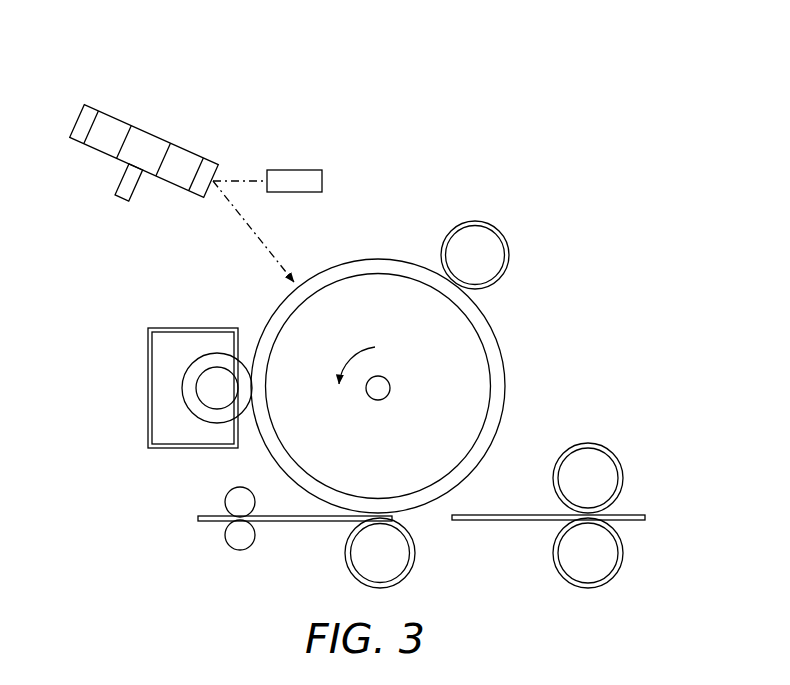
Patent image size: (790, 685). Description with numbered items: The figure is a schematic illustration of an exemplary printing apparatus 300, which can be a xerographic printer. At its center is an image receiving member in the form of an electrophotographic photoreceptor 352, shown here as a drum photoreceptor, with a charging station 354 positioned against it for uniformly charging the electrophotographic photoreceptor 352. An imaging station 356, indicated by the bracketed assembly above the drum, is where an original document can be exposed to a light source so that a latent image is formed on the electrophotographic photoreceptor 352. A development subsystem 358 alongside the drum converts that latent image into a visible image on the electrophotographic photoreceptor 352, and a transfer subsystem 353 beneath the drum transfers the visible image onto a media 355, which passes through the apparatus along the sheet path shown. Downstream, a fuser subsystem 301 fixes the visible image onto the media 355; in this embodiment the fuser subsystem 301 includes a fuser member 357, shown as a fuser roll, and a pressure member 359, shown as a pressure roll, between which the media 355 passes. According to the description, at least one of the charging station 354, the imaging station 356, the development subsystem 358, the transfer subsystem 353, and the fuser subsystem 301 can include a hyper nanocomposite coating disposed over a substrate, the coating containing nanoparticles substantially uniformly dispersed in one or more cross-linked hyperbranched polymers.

The printing apparatus 300 is at (478, 62).
The fuser subsystem 301 is at (600, 418).
The electrophotographic photoreceptor 352 is at (497, 337).
The transfer subsystem 353 is at (407, 573).
The charging station 354 is at (502, 228).
The media 355 is at (212, 516).
The imaging station 356 is at (312, 102).
The fuser member 357 is at (560, 458).
The development subsystem 358 is at (136, 321).
The pressure member 359 is at (560, 575).